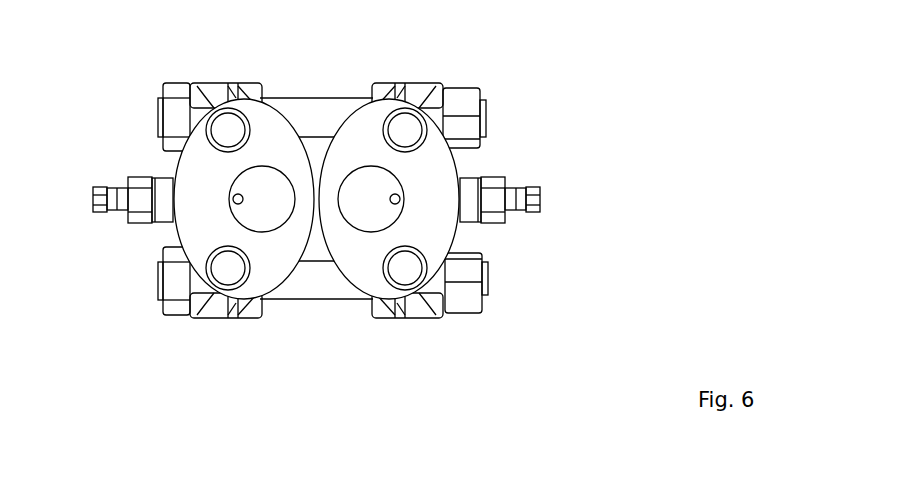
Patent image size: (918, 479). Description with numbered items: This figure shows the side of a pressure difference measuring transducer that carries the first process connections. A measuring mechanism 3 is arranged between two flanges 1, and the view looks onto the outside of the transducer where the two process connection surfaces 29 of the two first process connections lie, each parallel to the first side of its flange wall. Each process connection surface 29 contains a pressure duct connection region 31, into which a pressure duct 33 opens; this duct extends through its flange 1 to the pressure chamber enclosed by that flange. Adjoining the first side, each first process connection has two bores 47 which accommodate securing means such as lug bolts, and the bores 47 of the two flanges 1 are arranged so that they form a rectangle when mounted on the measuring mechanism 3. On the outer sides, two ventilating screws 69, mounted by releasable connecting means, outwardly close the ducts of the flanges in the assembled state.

The flange 1 is at (215, 85).
The measuring mechanism 3 is at (313, 282).
The process connection surface 29 is at (218, 206).
The pressure duct connection region 31 is at (283, 206).
The pressure duct 33 is at (234, 203).
The bore 47 is at (224, 128).
The ventilating screw 69 is at (145, 178).